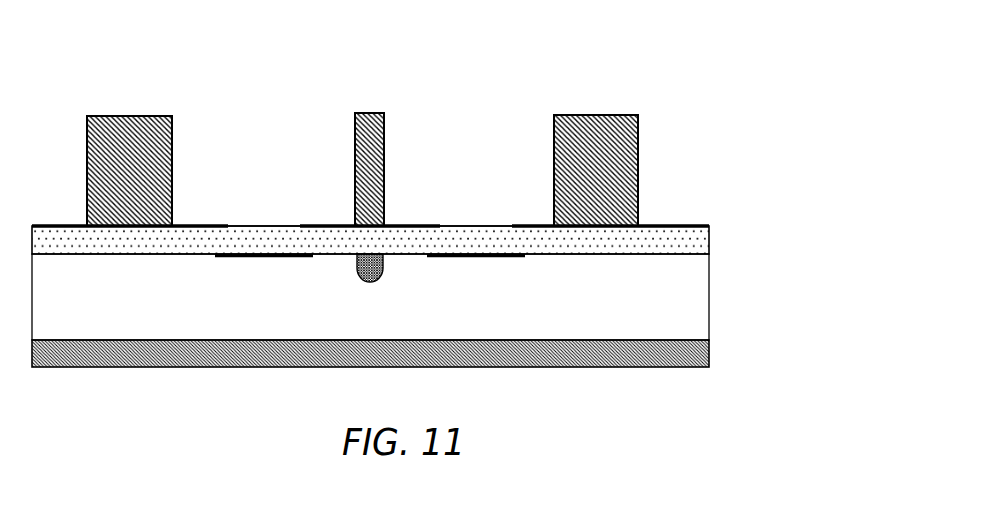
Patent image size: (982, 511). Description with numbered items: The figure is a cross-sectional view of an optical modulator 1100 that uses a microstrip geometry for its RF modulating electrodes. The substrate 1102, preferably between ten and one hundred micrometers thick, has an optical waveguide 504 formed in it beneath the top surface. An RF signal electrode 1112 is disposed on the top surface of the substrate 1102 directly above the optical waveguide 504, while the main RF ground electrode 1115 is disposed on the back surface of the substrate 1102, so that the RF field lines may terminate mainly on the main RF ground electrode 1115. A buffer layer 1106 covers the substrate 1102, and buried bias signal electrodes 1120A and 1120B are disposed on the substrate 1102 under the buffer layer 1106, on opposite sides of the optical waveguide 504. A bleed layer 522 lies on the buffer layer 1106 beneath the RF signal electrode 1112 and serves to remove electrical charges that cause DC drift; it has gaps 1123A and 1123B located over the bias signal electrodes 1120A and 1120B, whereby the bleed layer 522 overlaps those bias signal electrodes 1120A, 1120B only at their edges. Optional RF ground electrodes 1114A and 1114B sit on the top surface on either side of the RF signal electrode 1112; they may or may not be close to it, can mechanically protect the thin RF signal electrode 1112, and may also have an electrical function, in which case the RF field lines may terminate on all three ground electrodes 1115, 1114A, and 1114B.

The optical modulator 1100 is at (580, 28).
The substrate 1102 is at (680, 323).
The buffer layer 1106 is at (697, 242).
The RF signal electrode 1112 is at (378, 148).
The RF ground electrode 1114A is at (163, 155).
The RF ground electrode 1114B is at (628, 147).
The main RF ground electrode 1115 is at (622, 358).
The bias signal electrode 1120A is at (255, 258).
The bias signal electrode 1120B is at (485, 258).
The gap 1123A is at (265, 185).
The gap 1123B is at (479, 204).
The optical waveguide 504 is at (386, 288).
The bleed layer 522 is at (681, 216).